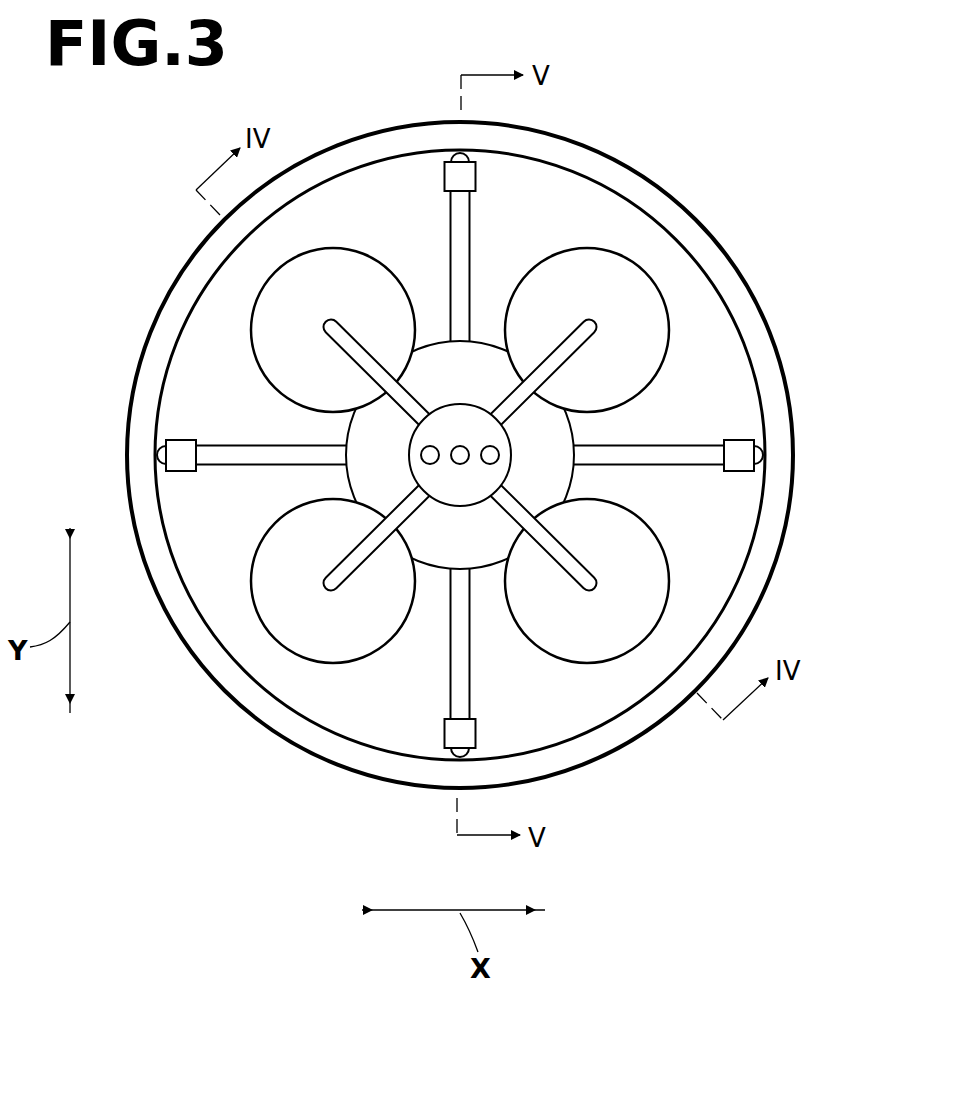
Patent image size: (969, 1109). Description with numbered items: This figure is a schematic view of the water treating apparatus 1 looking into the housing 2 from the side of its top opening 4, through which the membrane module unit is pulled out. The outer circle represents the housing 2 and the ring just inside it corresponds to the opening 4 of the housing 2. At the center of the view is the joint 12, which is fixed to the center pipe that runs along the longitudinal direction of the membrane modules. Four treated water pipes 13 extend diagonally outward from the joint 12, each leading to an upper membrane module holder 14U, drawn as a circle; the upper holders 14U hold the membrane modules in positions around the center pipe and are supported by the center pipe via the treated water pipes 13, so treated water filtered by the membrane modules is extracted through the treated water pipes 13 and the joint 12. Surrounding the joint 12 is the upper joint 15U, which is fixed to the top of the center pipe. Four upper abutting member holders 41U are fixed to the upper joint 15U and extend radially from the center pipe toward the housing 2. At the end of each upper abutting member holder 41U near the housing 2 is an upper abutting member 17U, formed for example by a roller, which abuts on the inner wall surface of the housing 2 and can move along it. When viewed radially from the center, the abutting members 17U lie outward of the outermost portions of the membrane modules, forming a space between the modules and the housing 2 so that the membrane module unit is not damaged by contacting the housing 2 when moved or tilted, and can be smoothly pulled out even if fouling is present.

The water treating apparatus 1 is at (779, 102).
The housing 2 is at (770, 323).
The opening 4 is at (688, 291).
The joint 12 is at (441, 497).
The treated water pipe 13 is at (345, 338).
The upper membrane module holder 14U is at (266, 300).
The upper joint 15U is at (483, 552).
The upper abutting member 17U is at (460, 153).
The upper abutting member holder 41U is at (474, 210).